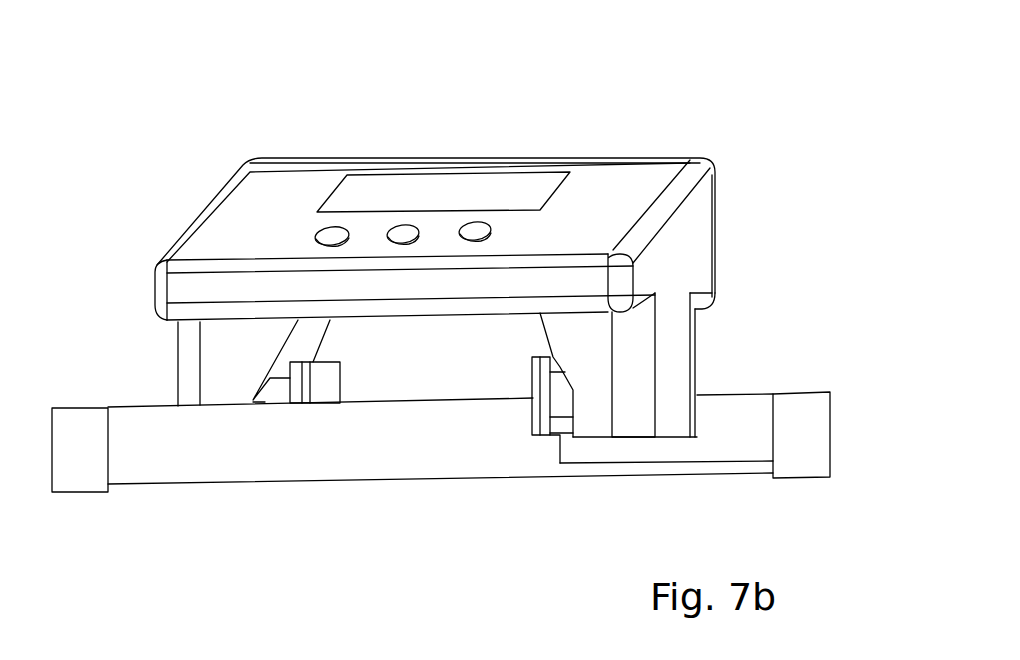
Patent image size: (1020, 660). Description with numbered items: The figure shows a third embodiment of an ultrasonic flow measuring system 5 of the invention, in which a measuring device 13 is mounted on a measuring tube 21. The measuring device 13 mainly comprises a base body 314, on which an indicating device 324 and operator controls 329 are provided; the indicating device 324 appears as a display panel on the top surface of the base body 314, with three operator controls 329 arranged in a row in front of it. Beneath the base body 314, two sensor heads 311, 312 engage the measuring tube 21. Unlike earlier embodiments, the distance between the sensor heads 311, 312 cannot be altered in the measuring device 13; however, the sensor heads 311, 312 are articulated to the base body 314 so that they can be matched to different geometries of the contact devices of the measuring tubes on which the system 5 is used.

The ultrasonic flow measuring system 5 is at (567, 113).
The measuring device 13 is at (617, 180).
The measuring tube 21 is at (160, 463).
The sensor head 311 is at (307, 385).
The sensor head 312 is at (543, 415).
The base body 314 is at (697, 263).
The indicating device 324 is at (355, 198).
The operator controls 329 is at (330, 232).